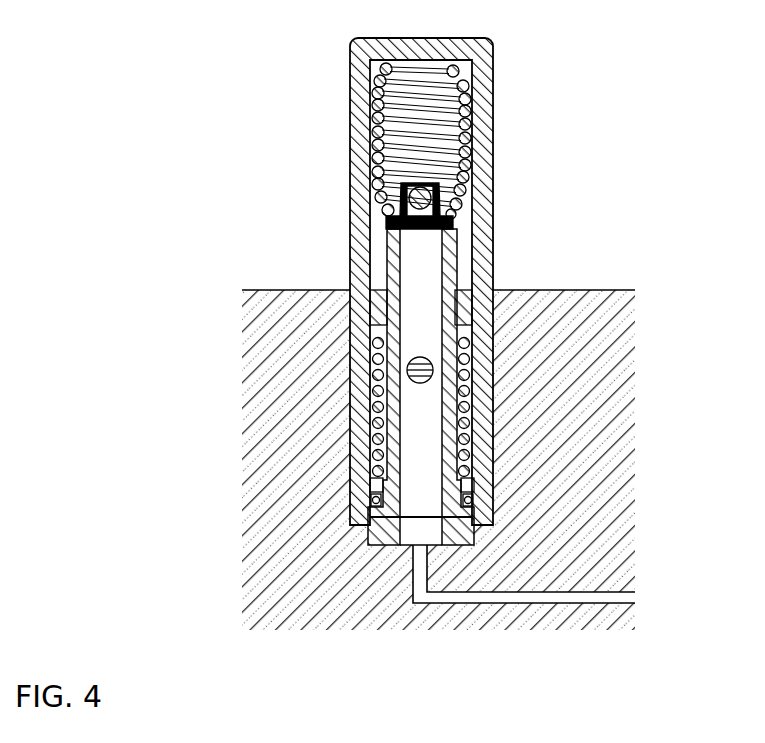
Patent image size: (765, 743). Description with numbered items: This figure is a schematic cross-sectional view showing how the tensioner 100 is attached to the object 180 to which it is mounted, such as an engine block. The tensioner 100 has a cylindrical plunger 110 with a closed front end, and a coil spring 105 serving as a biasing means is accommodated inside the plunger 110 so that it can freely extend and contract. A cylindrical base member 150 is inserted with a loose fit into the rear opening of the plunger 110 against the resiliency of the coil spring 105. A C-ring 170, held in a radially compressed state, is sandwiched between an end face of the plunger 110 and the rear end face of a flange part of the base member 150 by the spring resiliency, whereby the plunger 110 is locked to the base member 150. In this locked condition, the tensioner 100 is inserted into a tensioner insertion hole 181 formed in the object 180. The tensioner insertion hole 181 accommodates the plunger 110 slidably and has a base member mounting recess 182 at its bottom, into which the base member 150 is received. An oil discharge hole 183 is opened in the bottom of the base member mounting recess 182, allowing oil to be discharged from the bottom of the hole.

The tensioner 100 is at (425, 363).
The coil spring 105 is at (470, 135).
The plunger 110 is at (492, 218).
The base member 150 is at (463, 546).
The C-ring 170 is at (473, 497).
The object to which the tensioner is mounted 180 is at (412, 432).
The tensioner insertion hole 181 is at (348, 382).
The base member mounting recess 182 is at (377, 546).
The oil discharge hole 183 is at (418, 548).